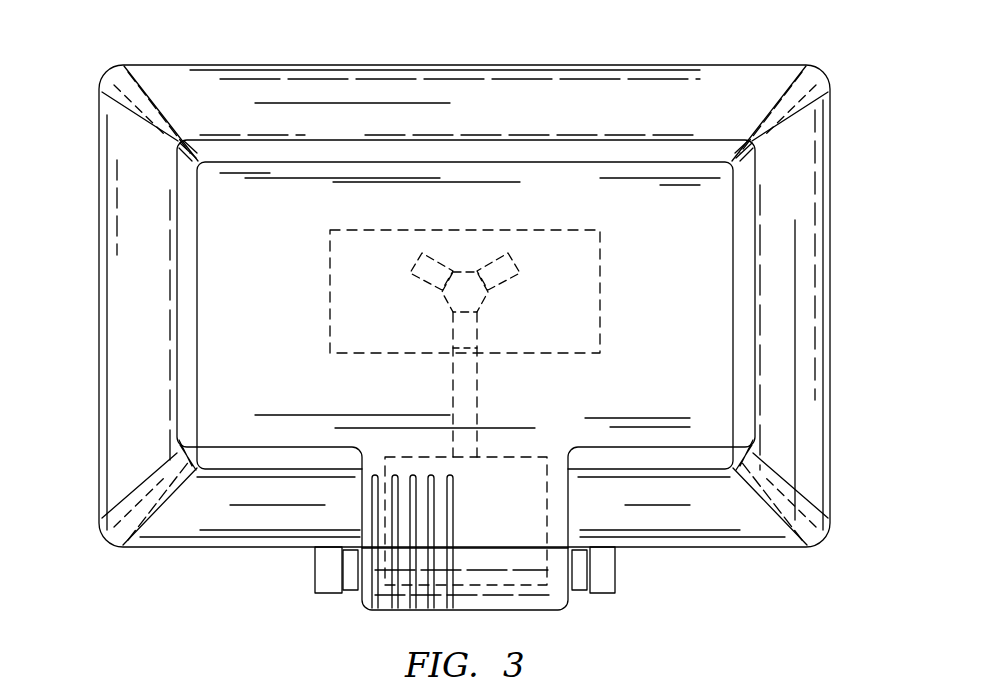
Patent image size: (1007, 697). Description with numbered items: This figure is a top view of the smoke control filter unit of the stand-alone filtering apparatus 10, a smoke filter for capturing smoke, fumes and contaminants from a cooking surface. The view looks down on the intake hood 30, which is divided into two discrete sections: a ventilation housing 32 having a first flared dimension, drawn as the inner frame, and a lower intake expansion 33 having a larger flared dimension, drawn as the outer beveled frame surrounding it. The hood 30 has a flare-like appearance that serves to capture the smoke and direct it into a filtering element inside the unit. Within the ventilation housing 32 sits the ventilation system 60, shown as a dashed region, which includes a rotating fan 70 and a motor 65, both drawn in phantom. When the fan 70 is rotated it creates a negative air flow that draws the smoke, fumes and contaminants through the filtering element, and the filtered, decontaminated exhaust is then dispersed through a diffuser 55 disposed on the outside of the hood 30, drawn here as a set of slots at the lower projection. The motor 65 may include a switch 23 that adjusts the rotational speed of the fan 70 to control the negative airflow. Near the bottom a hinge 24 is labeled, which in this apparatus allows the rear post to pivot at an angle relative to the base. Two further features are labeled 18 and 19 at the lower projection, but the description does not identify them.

The stand-alone filtering apparatus 10 is at (100, 70).
The base portion of housing 18 is at (572, 612).
The connector tab housing 19 is at (563, 518).
The switch 23 is at (352, 590).
The hinge 24 is at (315, 576).
The intake hood 30 is at (432, 216).
The ventilation housing 32 is at (472, 156).
The lower intake expansion 33 is at (651, 67).
The diffuser 55 is at (430, 492).
The ventilation system 60 is at (607, 300).
The motor 65 is at (528, 458).
The rotating fan 70 is at (490, 298).